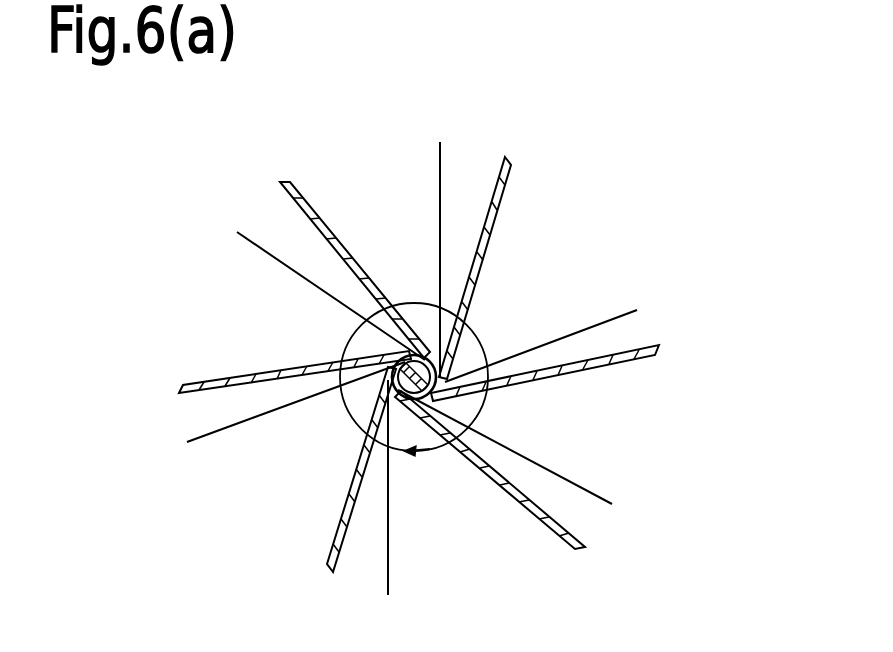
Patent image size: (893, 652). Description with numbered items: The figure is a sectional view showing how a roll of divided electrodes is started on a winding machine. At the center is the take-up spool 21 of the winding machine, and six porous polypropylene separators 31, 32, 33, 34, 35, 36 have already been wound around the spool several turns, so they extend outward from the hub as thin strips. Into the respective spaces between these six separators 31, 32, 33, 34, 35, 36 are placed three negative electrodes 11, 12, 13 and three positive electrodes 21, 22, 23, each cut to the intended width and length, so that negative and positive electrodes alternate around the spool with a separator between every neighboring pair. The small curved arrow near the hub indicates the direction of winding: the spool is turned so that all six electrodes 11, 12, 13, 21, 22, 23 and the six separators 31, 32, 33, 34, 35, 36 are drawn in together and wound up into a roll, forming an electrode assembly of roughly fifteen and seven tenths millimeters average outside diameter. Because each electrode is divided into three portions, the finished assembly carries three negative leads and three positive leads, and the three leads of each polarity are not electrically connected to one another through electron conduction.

The negative electrode 11 is at (578, 548).
The negative electrode 12 is at (512, 160).
The negative electrode 13 is at (223, 377).
The positive electrode 21 is at (656, 355).
The positive electrode 22 is at (285, 182).
The positive electrode 23 is at (337, 537).
The separator 31 is at (390, 572).
The separator 32 is at (612, 503).
The separator 33 is at (637, 310).
The separator 34 is at (441, 152).
The separator 35 is at (237, 232).
The separator 36 is at (202, 436).